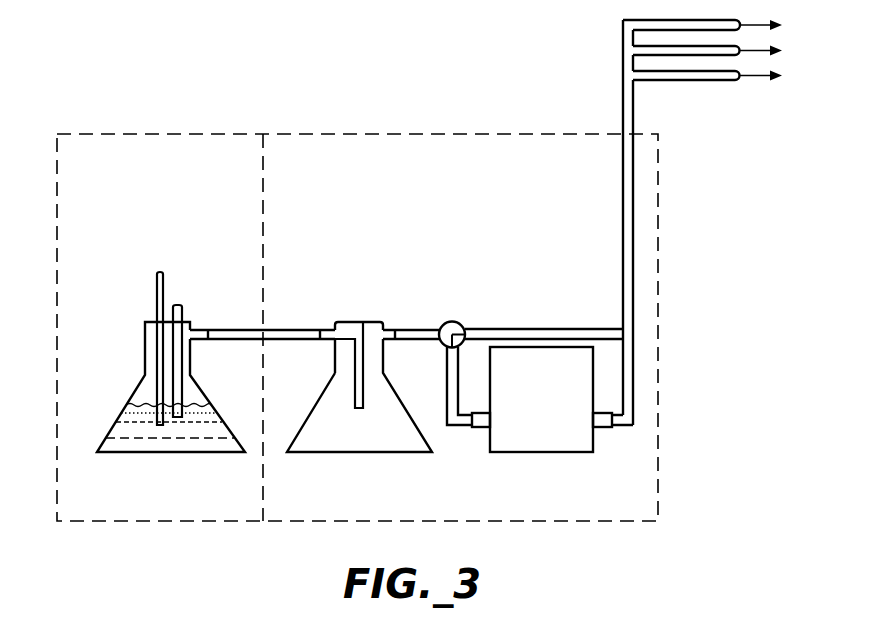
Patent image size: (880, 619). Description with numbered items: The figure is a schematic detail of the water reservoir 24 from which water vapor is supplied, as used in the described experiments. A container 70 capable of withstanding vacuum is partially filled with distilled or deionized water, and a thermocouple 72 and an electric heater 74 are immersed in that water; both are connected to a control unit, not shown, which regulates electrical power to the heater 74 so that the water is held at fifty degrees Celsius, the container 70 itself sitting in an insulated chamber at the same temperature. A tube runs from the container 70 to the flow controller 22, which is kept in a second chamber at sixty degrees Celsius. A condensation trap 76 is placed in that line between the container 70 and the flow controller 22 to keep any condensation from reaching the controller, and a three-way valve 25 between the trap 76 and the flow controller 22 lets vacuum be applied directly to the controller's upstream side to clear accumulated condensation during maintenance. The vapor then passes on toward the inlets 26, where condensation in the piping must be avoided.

The flow controller 22 is at (540, 462).
The water reservoir 24 is at (678, 280).
The three-way valve 25 is at (452, 313).
The inlets 26 is at (643, 100).
The container 70 is at (185, 478).
The thermocouple 72 is at (156, 288).
The electric heater 74 is at (180, 312).
The condensation trap 76 is at (358, 313).